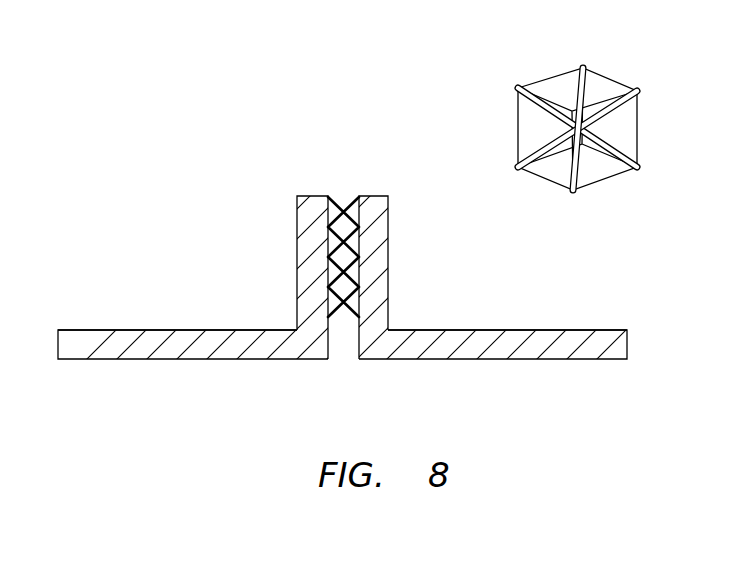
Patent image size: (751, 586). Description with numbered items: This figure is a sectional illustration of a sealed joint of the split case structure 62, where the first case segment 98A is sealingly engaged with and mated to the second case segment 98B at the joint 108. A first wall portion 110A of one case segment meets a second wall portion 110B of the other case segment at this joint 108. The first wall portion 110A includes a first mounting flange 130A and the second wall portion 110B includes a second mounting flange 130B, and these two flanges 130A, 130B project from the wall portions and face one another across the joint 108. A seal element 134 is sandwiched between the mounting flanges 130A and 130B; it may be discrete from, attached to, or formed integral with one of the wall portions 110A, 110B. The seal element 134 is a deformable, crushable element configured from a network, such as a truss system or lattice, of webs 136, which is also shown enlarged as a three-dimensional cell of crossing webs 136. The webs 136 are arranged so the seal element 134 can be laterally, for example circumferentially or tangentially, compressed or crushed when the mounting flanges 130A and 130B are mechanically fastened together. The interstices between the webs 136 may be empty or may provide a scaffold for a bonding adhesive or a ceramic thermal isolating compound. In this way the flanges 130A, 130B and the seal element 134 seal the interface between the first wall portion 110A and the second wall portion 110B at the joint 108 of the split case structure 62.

The split case structure 62 is at (110, 210).
The first case segment 98A is at (115, 376).
The second case segment 98B is at (538, 378).
The first wall portion 110A is at (125, 330).
The second wall portion 110B is at (575, 330).
The joint 108 is at (331, 168).
The first mounting flange 130A is at (312, 195).
The second mounting flange 130B is at (380, 197).
The seal element 134 is at (341, 325).
The webs 136 is at (347, 268).